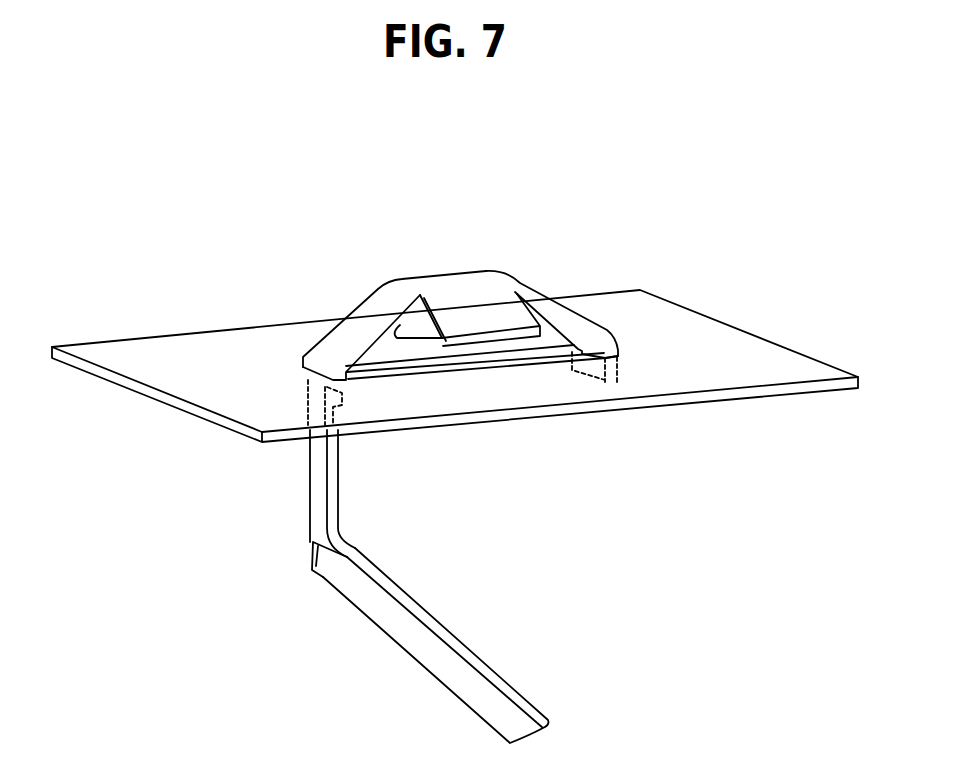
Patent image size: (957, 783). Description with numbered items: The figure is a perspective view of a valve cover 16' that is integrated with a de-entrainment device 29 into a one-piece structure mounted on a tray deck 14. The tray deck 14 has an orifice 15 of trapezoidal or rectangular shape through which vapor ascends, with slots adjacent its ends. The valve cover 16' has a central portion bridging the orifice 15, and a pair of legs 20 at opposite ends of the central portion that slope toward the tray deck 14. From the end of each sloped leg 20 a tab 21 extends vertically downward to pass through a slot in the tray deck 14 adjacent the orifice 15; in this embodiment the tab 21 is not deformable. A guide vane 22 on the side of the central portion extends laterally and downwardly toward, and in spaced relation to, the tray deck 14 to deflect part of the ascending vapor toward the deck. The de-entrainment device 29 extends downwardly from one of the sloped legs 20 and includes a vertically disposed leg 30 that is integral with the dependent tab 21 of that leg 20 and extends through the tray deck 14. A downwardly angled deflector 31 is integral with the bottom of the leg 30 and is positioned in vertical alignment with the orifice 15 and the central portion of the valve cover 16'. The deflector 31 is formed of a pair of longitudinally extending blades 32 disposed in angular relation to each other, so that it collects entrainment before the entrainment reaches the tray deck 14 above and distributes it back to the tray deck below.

The tray deck 14 is at (168, 340).
The valve cover 16' is at (418, 435).
The sloped leg 20 is at (362, 320).
The guide vane 22 is at (458, 324).
The orifice 15 is at (535, 360).
The tab 21 is at (313, 395).
The de-entrainment device 29 is at (285, 482).
The vertically disposed leg 30 is at (333, 490).
The deflector 31 is at (449, 622).
The blade 32 is at (343, 598).